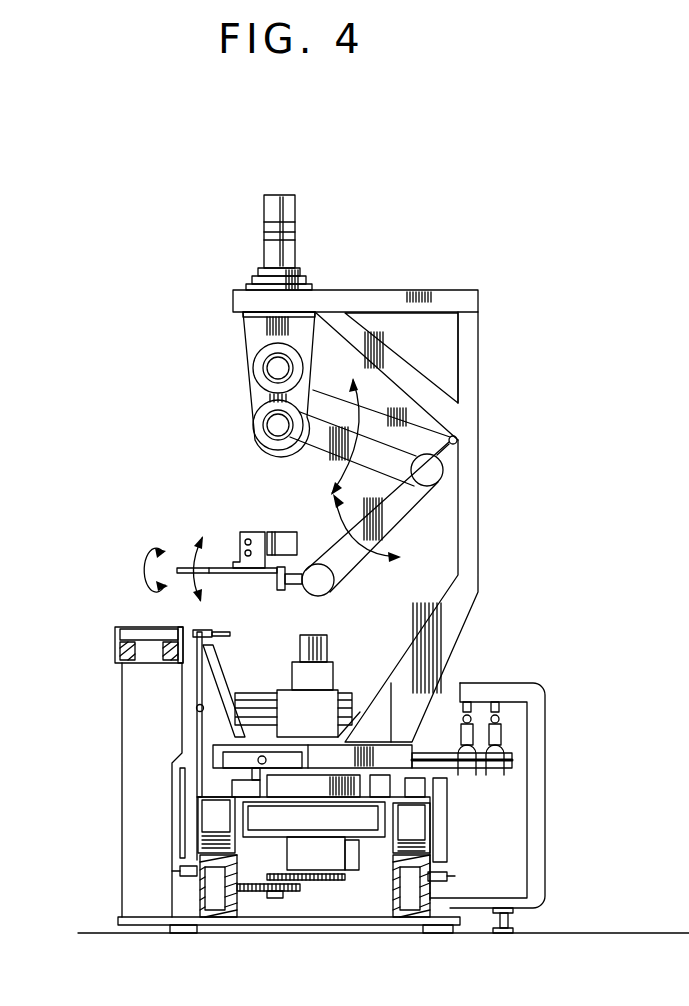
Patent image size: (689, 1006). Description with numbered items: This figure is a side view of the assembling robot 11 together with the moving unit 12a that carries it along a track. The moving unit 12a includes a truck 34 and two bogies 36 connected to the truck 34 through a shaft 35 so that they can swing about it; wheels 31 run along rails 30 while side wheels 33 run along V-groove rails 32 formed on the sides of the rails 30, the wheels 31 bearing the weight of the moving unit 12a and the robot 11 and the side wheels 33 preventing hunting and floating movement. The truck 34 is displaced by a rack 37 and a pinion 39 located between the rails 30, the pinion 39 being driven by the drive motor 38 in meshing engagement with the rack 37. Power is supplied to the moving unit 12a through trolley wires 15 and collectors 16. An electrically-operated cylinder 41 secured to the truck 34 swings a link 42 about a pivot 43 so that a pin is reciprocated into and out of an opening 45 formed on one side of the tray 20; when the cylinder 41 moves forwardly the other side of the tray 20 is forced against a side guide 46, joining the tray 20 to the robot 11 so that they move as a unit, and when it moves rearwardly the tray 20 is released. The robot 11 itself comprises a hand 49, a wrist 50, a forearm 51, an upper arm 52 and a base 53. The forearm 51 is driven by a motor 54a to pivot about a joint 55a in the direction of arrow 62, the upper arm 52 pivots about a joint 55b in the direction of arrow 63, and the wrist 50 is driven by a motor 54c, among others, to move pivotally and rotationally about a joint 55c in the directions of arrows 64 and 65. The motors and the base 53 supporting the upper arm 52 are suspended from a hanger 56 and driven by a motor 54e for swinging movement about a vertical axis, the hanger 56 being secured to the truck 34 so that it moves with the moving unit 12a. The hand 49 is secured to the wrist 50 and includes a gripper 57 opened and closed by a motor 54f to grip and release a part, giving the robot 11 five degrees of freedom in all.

The assembling robot 11 is at (245, 330).
The moving unit 12a is at (355, 843).
The trolley wires 15 is at (497, 720).
The collectors 16 is at (498, 735).
The tray 20 is at (132, 628).
The rails 30 is at (240, 907).
The wheels 31 is at (212, 817).
The V-groove rails 32 is at (200, 893).
The side wheels 33 is at (192, 865).
The truck 34 is at (403, 762).
The shaft 35 is at (322, 770).
The bogies 36 is at (270, 818).
The rack 37 is at (242, 893).
The drive motor 38 is at (343, 690).
The pinion 39 is at (288, 893).
The electrically-operated cylinder 41 is at (232, 757).
The link 42 is at (200, 675).
The pivot 43 is at (197, 706).
The opening 45 is at (180, 628).
The side guide 46 is at (116, 636).
The hand 49 is at (223, 562).
The wrist 50 is at (297, 583).
The forearm 51 is at (390, 517).
The upper arm 52 is at (323, 448).
The base 53 is at (250, 337).
The motor 54a is at (262, 352).
The motor 54c is at (268, 403).
The motor 54e is at (270, 252).
The motor 54f is at (283, 543).
The joint 55a is at (435, 473).
The joint 55b is at (273, 425).
The joint 55c is at (323, 585).
The hanger 56 is at (478, 397).
The gripper 57 is at (187, 567).
The arrow 62 is at (369, 543).
The arrow 63 is at (354, 440).
The arrow 64 is at (219, 577).
The arrow 65 is at (153, 543).